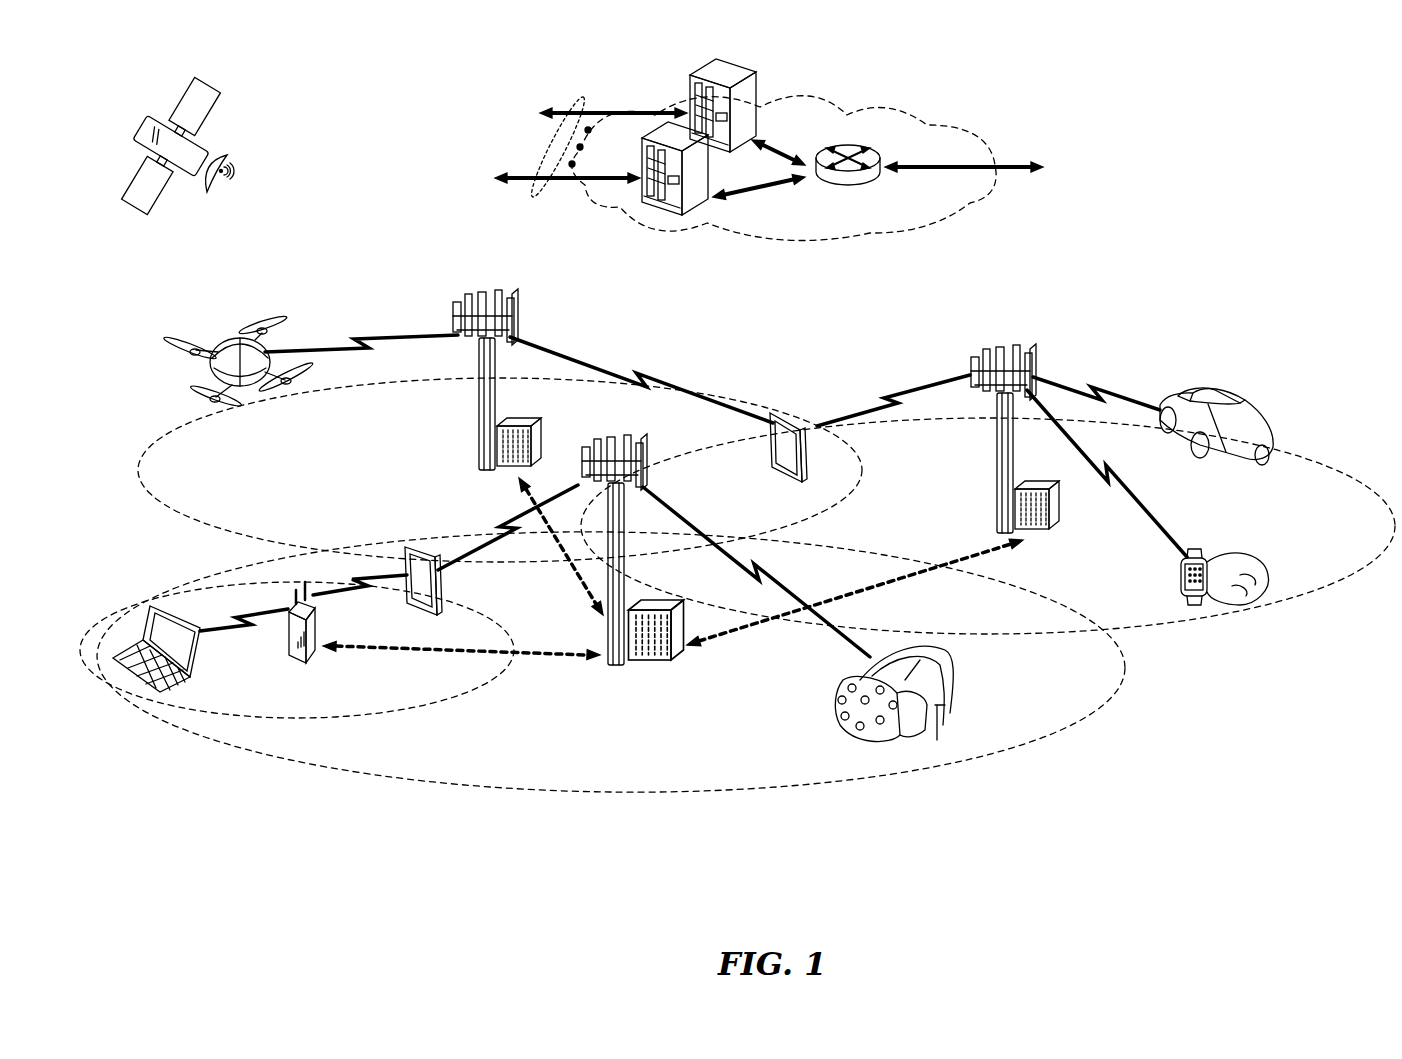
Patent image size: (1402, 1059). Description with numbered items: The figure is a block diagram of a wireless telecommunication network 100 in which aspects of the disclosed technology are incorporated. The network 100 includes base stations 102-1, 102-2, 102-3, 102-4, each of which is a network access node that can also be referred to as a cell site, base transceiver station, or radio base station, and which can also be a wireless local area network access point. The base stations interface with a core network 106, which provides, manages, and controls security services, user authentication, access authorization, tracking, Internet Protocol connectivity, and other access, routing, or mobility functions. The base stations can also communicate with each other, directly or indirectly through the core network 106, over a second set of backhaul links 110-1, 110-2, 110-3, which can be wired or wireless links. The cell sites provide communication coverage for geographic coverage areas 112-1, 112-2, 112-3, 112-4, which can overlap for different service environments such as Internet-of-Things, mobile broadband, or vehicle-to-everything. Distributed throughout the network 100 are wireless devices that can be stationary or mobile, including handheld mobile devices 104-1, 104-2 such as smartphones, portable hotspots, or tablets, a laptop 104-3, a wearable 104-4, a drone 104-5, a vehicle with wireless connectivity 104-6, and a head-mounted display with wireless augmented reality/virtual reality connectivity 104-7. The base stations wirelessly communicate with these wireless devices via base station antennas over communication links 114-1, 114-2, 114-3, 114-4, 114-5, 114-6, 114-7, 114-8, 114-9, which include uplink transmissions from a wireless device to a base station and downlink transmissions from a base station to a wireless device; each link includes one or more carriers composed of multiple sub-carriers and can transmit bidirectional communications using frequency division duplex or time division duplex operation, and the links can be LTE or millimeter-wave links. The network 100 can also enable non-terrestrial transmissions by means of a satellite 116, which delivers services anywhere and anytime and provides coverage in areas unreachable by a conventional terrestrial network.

The wireless telecommunication network 100 is at (1294, 152).
The satellite 116 is at (214, 157).
The core network 106 is at (880, 238).
The base station 102-1 is at (610, 668).
The base station 102-2 is at (482, 420).
The base station 102-3 is at (995, 455).
The base station 102-4 is at (290, 655).
The handheld mobile device 104-1 is at (446, 600).
The handheld mobile device 104-2 is at (770, 452).
The laptop 104-3 is at (135, 688).
The wearable 104-4 is at (1195, 556).
The drone 104-5 is at (252, 388).
The vehicle with wireless connectivity 104-6 is at (1242, 415).
The head-mounted display 104-7 is at (945, 680).
The backhaul link 110-1 is at (372, 652).
The backhaul link 110-2 is at (918, 580).
The backhaul link 110-3 is at (582, 578).
The geographic coverage area 112-1 is at (547, 795).
The geographic coverage area 112-2 is at (422, 715).
The geographic coverage area 112-3 is at (200, 523).
The geographic coverage area 112-4 is at (1312, 470).
The communication link 114-1 is at (776, 580).
The communication link 114-2 is at (500, 524).
The communication link 114-3 is at (215, 628).
The communication link 114-4 is at (360, 592).
The communication link 114-5 is at (358, 341).
The communication link 114-6 is at (640, 377).
The communication link 114-7 is at (884, 396).
The communication link 114-8 is at (1118, 488).
The communication link 114-9 is at (1093, 391).